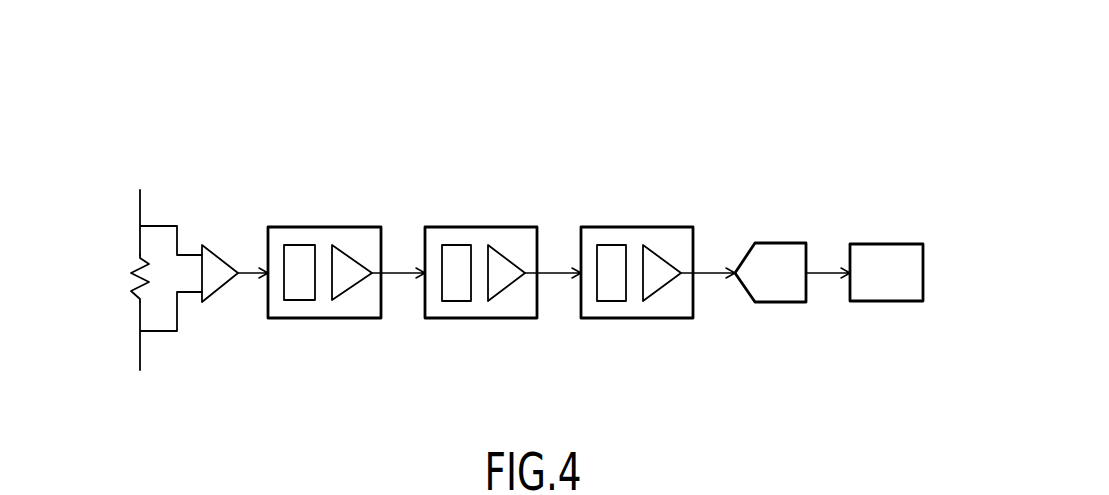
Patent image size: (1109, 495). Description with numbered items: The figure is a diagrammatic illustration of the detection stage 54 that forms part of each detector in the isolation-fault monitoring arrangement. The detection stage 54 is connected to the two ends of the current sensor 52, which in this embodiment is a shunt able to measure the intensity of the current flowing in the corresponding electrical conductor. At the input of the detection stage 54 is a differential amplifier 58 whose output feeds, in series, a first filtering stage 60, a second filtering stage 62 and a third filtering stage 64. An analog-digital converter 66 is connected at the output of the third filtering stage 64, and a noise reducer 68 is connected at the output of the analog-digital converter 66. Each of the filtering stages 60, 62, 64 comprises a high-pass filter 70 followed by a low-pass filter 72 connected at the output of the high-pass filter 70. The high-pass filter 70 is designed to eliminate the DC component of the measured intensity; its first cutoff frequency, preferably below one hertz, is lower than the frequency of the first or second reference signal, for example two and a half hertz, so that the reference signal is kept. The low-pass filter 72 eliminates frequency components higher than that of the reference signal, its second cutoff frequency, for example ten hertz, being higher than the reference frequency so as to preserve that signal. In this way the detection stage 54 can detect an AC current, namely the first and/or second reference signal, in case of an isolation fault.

The current sensor 52 is at (133, 265).
The detection stage 54 is at (263, 137).
The differential amplifier 58 is at (228, 267).
The first filtering stage 60 is at (355, 207).
The second filtering stage 62 is at (505, 215).
The third filtering stage 64 is at (640, 217).
The analog-digital converter 66 is at (773, 240).
The noise reducer 68 is at (879, 227).
The high-pass filter 70 is at (297, 287).
The low-pass filter 72 is at (343, 278).